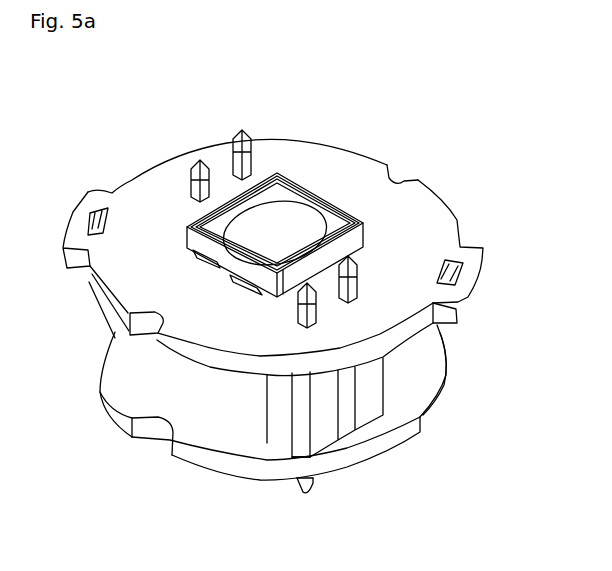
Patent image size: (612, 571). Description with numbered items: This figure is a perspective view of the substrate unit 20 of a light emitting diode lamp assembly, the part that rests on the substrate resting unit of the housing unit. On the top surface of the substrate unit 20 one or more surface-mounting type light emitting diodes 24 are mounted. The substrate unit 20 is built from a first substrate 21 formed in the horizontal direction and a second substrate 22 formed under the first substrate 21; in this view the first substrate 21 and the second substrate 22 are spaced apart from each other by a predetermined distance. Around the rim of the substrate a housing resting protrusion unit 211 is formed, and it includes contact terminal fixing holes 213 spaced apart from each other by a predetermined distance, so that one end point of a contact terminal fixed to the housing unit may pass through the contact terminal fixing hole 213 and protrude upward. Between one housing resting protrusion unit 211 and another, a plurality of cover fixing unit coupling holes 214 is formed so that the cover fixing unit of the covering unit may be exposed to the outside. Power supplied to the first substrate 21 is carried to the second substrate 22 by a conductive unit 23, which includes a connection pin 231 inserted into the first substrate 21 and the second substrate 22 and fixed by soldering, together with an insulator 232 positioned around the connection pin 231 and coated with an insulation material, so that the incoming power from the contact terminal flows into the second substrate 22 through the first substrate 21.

The substrate unit 20 is at (449, 111).
The first substrate 21 is at (420, 217).
The housing resting protrusion unit 211 is at (466, 300).
The contact terminal fixing hole 213 is at (463, 267).
The cover fixing unit coupling hole 214 is at (400, 179).
The second substrate 22 is at (165, 398).
The conductive unit 23 is at (187, 492).
The connection pin 231 is at (300, 485).
The insulator 232 is at (284, 417).
The surface-mounting type light emitting diode 24 is at (302, 218).